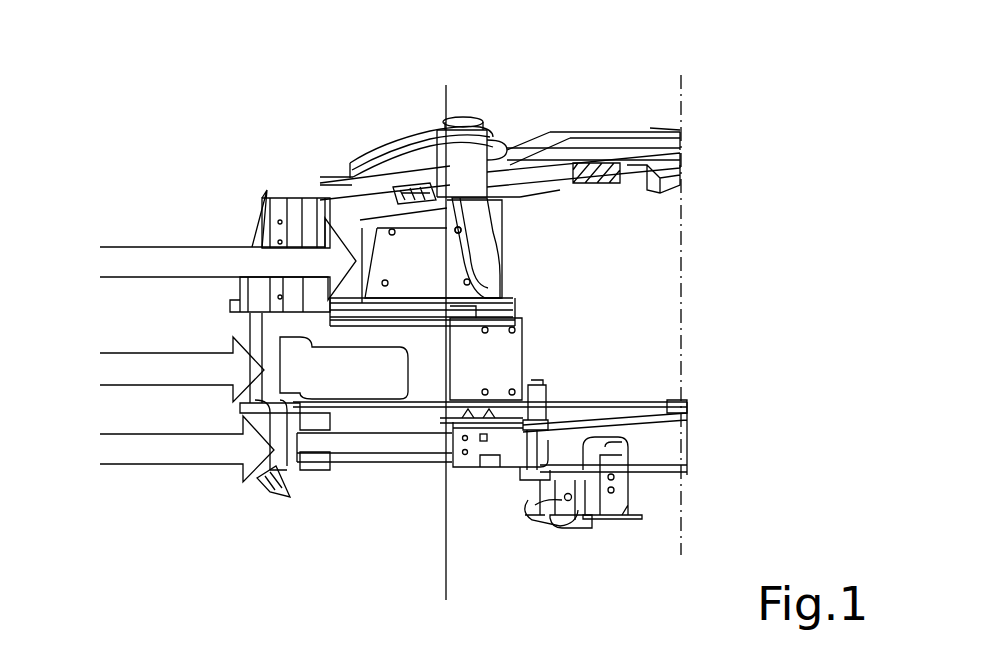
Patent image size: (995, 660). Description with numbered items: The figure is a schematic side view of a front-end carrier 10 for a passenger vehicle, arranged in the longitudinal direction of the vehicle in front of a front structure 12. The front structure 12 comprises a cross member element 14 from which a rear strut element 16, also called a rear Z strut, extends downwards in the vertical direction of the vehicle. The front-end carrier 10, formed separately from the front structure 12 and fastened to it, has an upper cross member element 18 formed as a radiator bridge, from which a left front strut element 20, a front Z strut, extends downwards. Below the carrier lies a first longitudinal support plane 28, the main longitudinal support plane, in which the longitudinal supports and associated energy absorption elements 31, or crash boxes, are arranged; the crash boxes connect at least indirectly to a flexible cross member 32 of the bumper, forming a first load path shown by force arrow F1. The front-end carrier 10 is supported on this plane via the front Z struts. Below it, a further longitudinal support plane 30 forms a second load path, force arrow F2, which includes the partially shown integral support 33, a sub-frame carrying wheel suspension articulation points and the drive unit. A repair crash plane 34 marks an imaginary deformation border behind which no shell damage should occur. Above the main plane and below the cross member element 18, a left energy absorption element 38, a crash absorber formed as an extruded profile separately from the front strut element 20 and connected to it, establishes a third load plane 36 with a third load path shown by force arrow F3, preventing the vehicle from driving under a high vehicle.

The front-end carrier 10 is at (467, 110).
The front structure 12 is at (628, 115).
The cross member element 14 is at (543, 157).
The rear strut element 16 is at (490, 208).
The cross member element 18 is at (374, 148).
The front strut element 20 is at (262, 207).
The first longitudinal support plane 28 is at (630, 352).
The further longitudinal support plane 30 is at (690, 420).
The energy absorption element 31 is at (515, 352).
The flexible cross member 32 is at (355, 375).
The integral support 33 is at (494, 480).
The repair crash plane 34 is at (448, 568).
The third load plane 36 is at (553, 253).
The energy absorption element 38 is at (422, 245).
The force arrow F1 is at (135, 368).
The force arrow F2 is at (130, 450).
The force arrow F3 is at (172, 258).